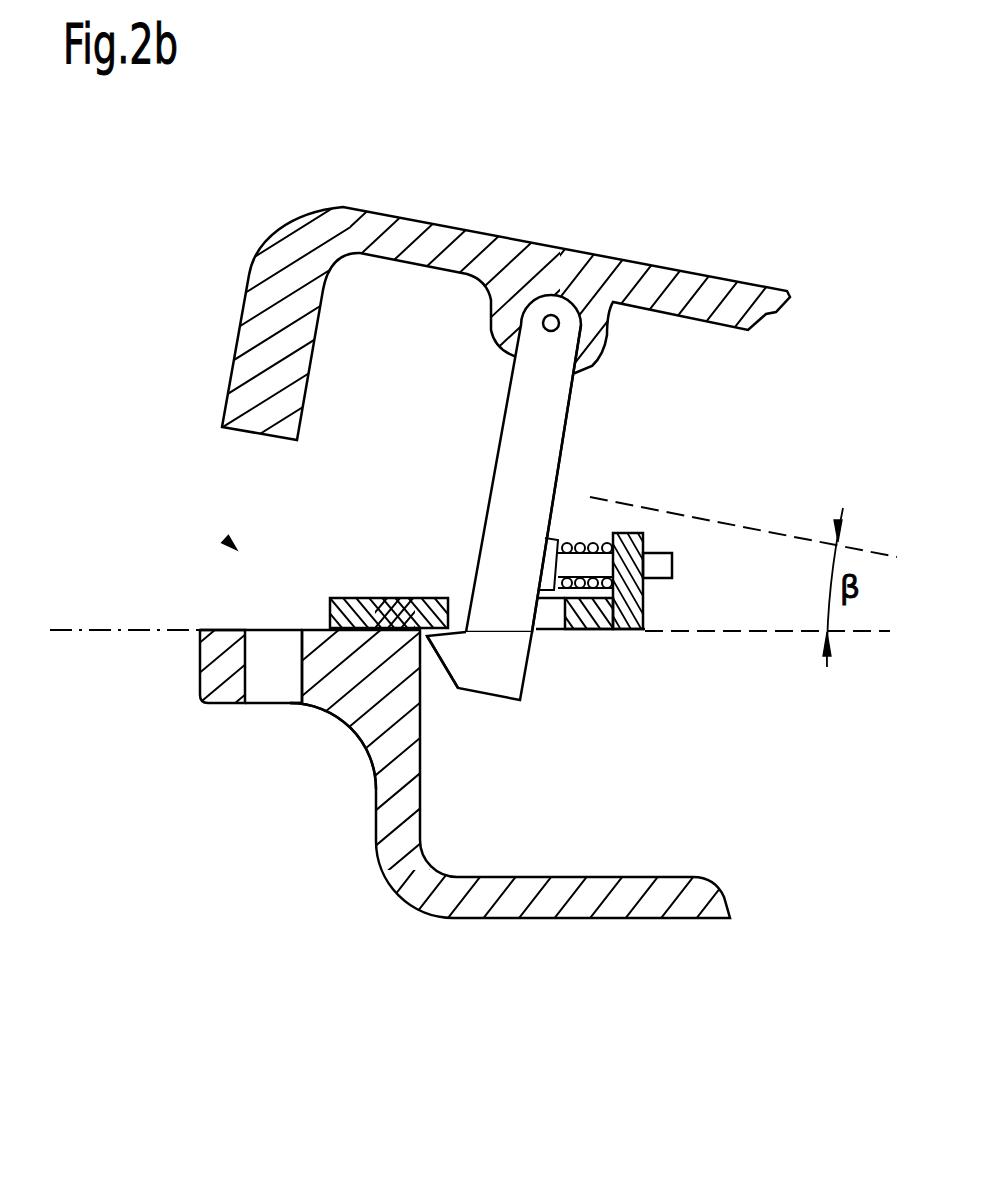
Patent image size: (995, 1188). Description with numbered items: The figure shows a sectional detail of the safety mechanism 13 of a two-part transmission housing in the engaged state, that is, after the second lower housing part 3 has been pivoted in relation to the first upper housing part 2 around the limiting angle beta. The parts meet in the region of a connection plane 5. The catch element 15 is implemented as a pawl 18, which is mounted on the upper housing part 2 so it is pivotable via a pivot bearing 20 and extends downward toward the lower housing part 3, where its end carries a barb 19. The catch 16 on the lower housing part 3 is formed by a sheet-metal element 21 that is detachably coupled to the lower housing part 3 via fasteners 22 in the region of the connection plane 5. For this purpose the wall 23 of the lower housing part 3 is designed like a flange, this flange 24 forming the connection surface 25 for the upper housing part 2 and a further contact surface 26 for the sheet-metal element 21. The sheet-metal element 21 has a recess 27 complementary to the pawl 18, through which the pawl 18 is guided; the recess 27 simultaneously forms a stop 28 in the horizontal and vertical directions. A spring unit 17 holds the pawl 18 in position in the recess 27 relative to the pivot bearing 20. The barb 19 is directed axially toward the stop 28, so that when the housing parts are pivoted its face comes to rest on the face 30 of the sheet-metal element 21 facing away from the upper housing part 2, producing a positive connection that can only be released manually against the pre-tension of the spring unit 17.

The first upper housing part 2 is at (653, 283).
The second lower housing part 3 is at (482, 900).
The connection plane 5 is at (110, 613).
The safety mechanism 13 is at (237, 550).
The catch element 15 is at (533, 464).
The catch 16 is at (603, 631).
The spring unit 17 is at (592, 543).
The pawl 18 is at (547, 413).
The barb 19 is at (480, 667).
The pivot bearing 20 is at (543, 329).
The sheet-metal element 21 is at (643, 631).
The fasteners 22 is at (365, 595).
The wall 23 is at (207, 680).
The flange 24 is at (330, 700).
The connection surface 25 is at (228, 613).
The contact surface 26 is at (415, 600).
The recess 27 is at (543, 631).
The stop 28 is at (557, 630).
The face 30 is at (427, 637).